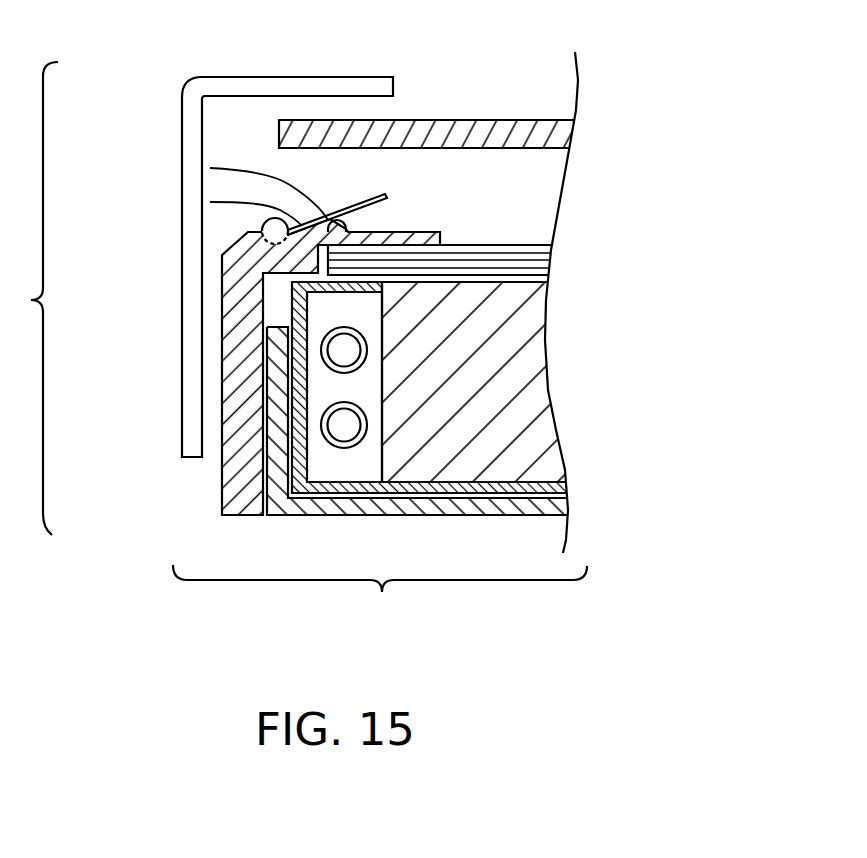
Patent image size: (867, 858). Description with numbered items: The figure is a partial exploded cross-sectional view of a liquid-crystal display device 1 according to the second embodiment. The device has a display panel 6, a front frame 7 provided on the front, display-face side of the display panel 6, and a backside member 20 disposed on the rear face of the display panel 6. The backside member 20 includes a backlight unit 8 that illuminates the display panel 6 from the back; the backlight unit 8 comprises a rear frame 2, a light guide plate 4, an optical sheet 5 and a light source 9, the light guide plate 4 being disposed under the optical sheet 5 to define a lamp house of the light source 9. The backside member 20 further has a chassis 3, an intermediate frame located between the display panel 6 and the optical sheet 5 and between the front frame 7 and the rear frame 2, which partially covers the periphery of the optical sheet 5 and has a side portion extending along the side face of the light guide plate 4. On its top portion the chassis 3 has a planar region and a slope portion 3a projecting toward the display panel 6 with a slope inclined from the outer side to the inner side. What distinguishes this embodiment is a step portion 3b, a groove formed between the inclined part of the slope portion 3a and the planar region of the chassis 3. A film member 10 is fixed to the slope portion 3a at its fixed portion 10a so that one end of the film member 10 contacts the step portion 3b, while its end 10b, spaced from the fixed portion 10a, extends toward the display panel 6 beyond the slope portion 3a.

The liquid-crystal display device 1 is at (33, 298).
The rear frame 2 is at (546, 515).
The chassis 3 is at (221, 334).
The slope portion 3a is at (342, 219).
The step portion 3b is at (262, 222).
The light guide plate 4 is at (530, 323).
The optical sheet 5 is at (527, 251).
The display panel 6 is at (522, 119).
The front frame 7 is at (240, 78).
The backlight unit 8 is at (380, 594).
The light source 9 is at (362, 437).
The film member 10 is at (210, 168).
The fixed portion 10a is at (210, 202).
The end 10b is at (387, 193).
The backside member 20 is at (644, 277).